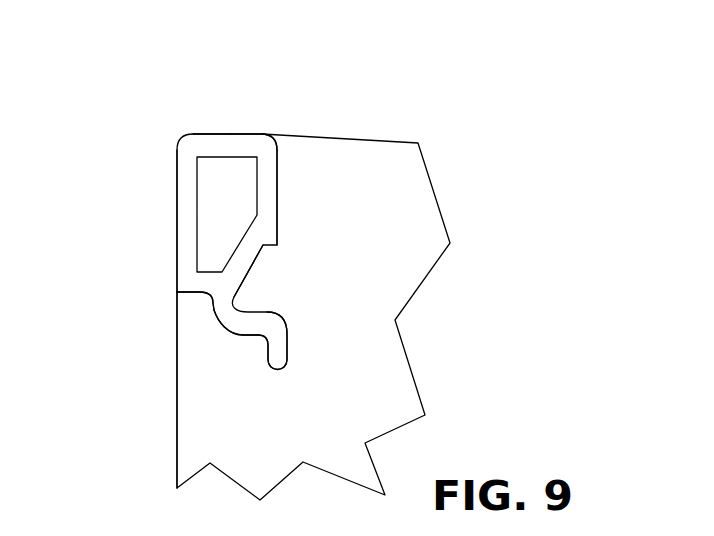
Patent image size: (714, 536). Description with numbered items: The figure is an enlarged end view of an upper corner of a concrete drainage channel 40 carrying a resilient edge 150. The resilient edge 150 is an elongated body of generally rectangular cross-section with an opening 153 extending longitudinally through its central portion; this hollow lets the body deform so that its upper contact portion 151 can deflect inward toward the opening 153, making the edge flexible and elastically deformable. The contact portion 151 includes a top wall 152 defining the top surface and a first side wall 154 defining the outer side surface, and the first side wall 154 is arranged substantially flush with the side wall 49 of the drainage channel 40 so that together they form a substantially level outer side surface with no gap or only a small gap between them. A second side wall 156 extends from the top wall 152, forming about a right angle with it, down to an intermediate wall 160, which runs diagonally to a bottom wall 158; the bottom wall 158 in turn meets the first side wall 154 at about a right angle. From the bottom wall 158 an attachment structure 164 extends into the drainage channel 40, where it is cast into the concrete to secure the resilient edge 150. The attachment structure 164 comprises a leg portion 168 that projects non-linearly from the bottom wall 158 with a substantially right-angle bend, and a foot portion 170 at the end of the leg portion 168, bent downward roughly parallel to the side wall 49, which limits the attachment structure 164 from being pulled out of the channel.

The drainage channel 40 is at (397, 141).
The side wall 49 is at (177, 452).
The resilient edge 150 is at (188, 135).
The contact portion 151 is at (214, 134).
The top wall 152 is at (242, 134).
The opening 153 is at (198, 220).
The first side wall 154 is at (177, 180).
The second side wall 156 is at (278, 192).
The bottom wall 158 is at (194, 298).
The intermediate wall 160 is at (250, 272).
The attachment structure 164 is at (186, 333).
The leg portion 168 is at (252, 335).
The foot portion 170 is at (268, 362).